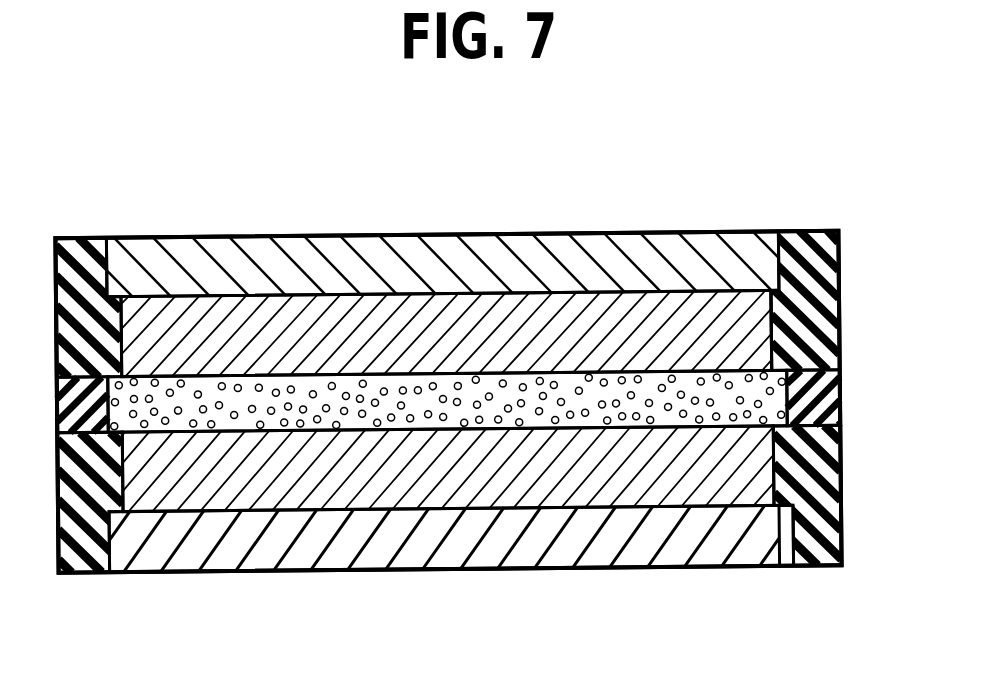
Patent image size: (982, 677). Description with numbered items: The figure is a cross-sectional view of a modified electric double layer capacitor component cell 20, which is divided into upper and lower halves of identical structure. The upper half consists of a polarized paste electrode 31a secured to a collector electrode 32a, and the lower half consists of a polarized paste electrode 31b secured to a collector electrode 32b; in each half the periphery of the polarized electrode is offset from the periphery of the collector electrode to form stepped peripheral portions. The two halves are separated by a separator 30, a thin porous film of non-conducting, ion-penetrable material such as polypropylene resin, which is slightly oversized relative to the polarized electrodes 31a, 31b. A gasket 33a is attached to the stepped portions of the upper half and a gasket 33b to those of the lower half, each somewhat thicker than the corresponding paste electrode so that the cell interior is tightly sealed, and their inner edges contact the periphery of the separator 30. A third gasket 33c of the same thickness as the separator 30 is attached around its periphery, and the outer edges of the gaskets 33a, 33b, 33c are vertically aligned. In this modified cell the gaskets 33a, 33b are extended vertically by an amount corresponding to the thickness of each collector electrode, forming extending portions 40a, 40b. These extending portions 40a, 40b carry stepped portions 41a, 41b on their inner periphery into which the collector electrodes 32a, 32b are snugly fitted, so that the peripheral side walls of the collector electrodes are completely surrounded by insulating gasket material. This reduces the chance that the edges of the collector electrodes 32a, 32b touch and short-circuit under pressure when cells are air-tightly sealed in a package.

The capacitor component cell 20 is at (488, 134).
The separator 30 is at (200, 403).
The polarized paste electrode 31a is at (340, 345).
The polarized paste electrode 31b is at (353, 458).
The collector electrode 32a is at (617, 240).
The collector electrode 32b is at (622, 553).
The gasket 33a is at (832, 317).
The gasket 33b is at (830, 497).
The third gasket 33c is at (828, 400).
The extending portion 40a is at (813, 240).
The extending portion 40b is at (820, 562).
The stepped portion 41a is at (773, 290).
The stepped portion 41b is at (778, 505).